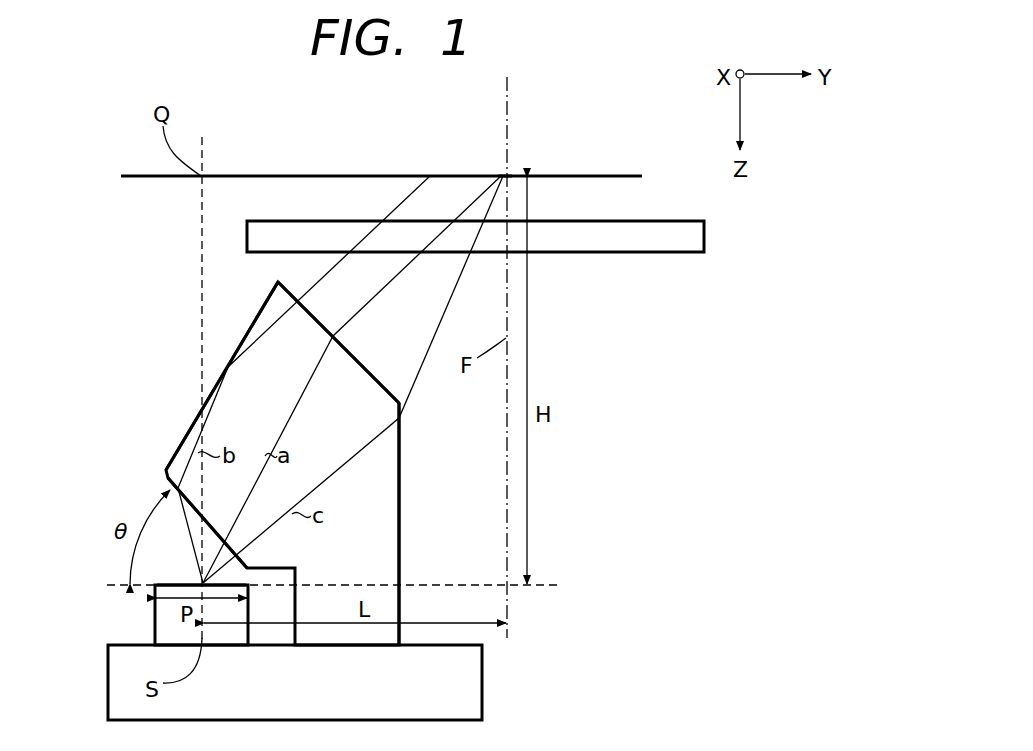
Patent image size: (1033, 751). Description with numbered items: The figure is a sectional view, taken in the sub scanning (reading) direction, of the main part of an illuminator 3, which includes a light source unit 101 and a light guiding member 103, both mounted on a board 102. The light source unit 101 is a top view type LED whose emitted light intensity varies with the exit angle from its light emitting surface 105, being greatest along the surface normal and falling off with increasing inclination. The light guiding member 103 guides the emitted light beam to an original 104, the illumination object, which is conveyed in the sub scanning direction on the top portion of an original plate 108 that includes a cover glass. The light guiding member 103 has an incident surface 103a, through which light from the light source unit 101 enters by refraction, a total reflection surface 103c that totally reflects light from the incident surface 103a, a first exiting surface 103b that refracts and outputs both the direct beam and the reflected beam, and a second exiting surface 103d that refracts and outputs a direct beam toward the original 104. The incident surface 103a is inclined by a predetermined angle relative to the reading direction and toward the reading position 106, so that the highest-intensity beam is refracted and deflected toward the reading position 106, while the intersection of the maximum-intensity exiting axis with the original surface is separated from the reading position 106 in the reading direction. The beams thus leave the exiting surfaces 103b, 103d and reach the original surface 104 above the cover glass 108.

The illuminator 3 is at (122, 310).
The light source unit 101 is at (154, 613).
The board 102 is at (482, 682).
The light guiding member 103 is at (400, 569).
The incident surface 103a is at (167, 488).
The first exiting surface 103b is at (291, 292).
The total reflection surface 103c is at (222, 377).
The second exiting surface 103d is at (401, 438).
The original 104 is at (382, 176).
The light emitting surface 105 is at (170, 585).
The reading position 106 is at (506, 177).
The original plate 108 is at (704, 232).